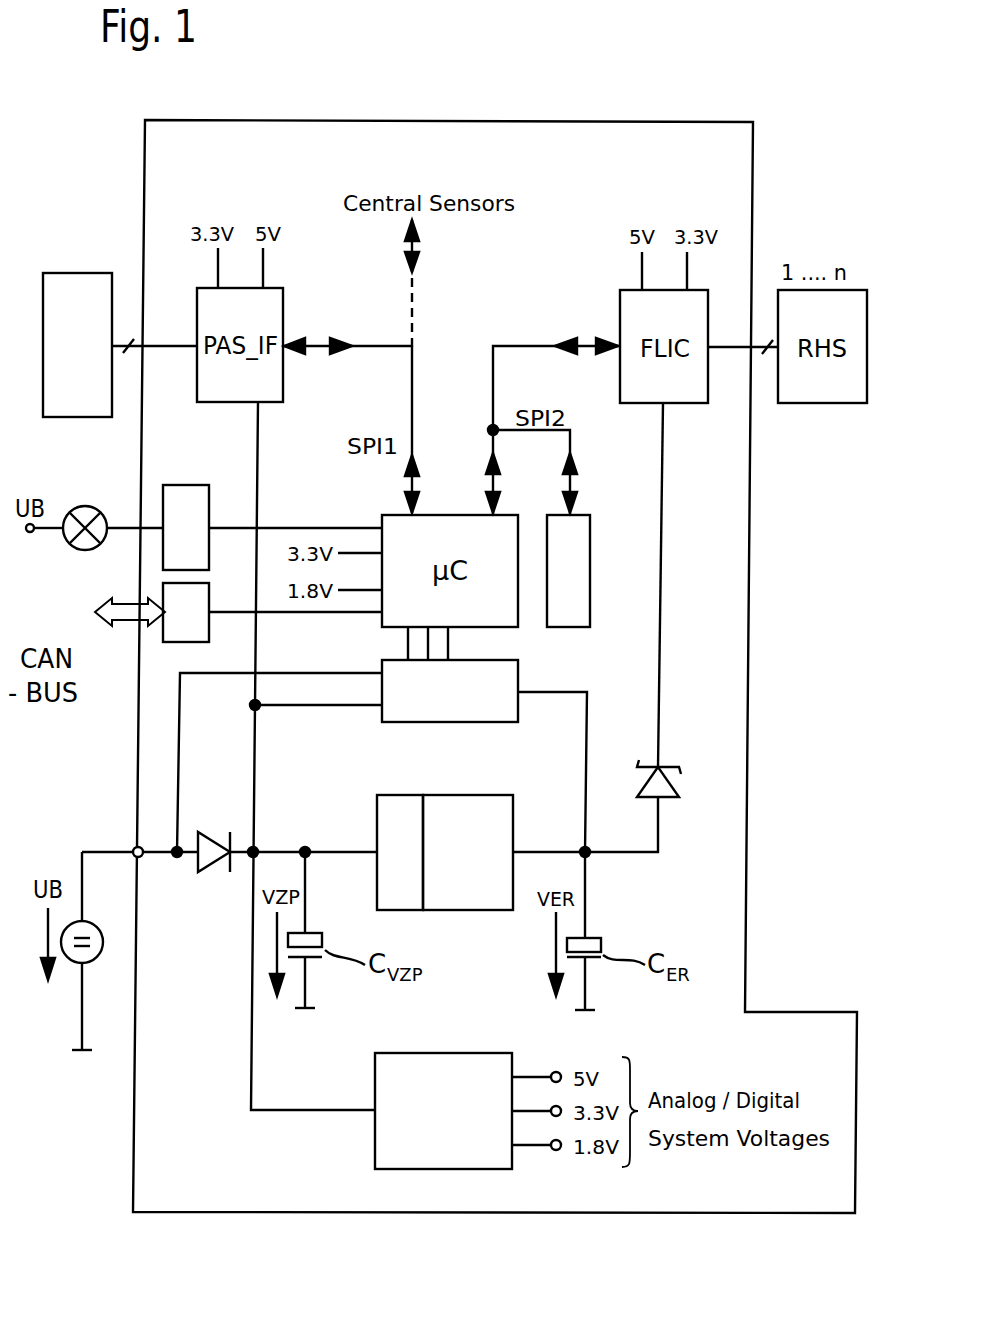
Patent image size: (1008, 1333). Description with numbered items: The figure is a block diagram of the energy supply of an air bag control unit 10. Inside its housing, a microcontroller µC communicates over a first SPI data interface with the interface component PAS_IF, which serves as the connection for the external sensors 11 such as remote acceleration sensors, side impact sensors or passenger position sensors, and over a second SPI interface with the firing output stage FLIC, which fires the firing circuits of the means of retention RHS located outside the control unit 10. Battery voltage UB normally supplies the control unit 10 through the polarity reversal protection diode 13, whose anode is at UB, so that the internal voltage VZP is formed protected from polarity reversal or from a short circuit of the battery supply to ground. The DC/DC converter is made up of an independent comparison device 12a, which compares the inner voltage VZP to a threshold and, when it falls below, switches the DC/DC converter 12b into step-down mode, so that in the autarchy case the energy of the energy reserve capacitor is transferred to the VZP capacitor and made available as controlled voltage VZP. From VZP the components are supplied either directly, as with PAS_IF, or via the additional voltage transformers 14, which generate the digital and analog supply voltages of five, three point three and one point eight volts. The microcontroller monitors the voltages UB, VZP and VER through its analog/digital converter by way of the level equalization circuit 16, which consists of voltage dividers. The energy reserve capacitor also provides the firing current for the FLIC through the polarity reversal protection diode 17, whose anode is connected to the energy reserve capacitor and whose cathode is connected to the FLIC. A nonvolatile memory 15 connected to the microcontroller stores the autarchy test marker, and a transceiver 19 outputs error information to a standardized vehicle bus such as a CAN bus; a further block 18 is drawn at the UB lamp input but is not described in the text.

The control unit 10 is at (730, 912).
The external sensors 11 is at (73, 417).
The comparison device 12a is at (400, 805).
The DC/DC converter 12b is at (488, 805).
The polarity reversal protection diode 13 is at (207, 832).
The voltage transformers 14 is at (447, 1053).
The nonvolatile memory 15 is at (590, 577).
The level equalization circuit 16 is at (518, 670).
The polarity reversal protection diode 17 is at (667, 775).
The input stage 18 is at (187, 485).
The transceiver 19 is at (163, 592).